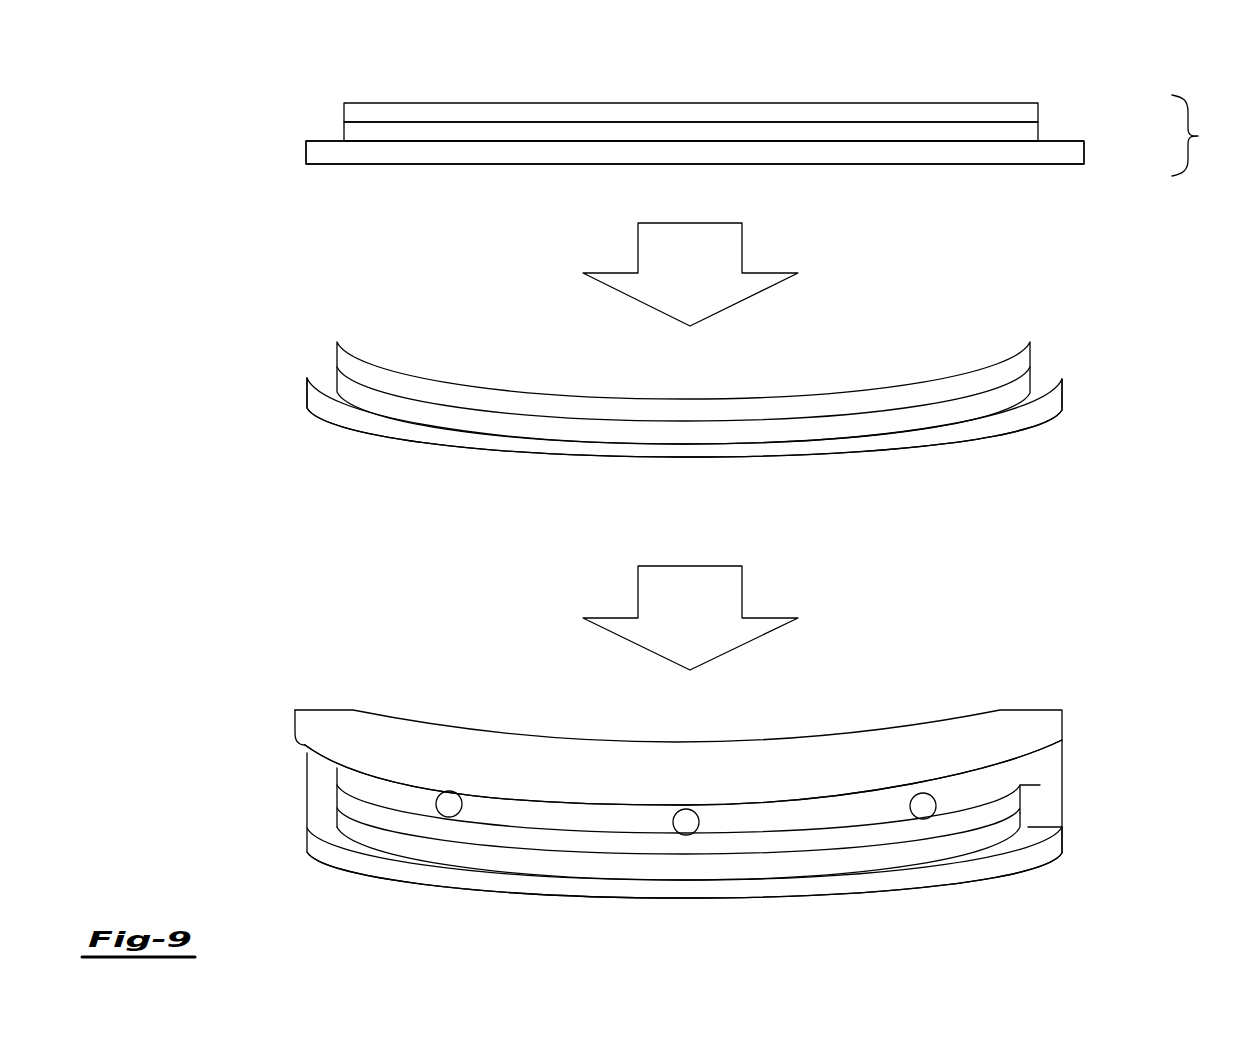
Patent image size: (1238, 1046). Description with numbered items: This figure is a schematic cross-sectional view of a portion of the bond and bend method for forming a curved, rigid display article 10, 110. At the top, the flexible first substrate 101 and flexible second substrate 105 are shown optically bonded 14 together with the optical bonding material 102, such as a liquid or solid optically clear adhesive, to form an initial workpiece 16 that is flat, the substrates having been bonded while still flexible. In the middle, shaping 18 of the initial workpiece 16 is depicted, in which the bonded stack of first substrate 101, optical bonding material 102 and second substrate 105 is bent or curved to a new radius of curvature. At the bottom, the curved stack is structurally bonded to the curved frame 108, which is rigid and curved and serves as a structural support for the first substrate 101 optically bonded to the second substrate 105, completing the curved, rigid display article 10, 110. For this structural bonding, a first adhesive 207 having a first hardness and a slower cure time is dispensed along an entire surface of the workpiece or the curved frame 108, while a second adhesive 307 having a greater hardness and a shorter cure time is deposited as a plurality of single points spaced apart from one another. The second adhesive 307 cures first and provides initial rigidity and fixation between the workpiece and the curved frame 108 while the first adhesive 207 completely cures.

The optically bonding 14 is at (292, 107).
The initial workpiece 16 is at (1197, 135).
The shaping 18 is at (292, 351).
The curved, rigid display article 10 is at (631, 779).
The curved, rigid display article 110 is at (254, 722).
The first substrate 101 is at (1084, 164).
The optical bonding material 102 is at (985, 130).
The second substrate 105 is at (1038, 103).
The curved frame 108 is at (1062, 722).
The first adhesive 207 is at (1000, 778).
The second adhesive 307 is at (686, 822).